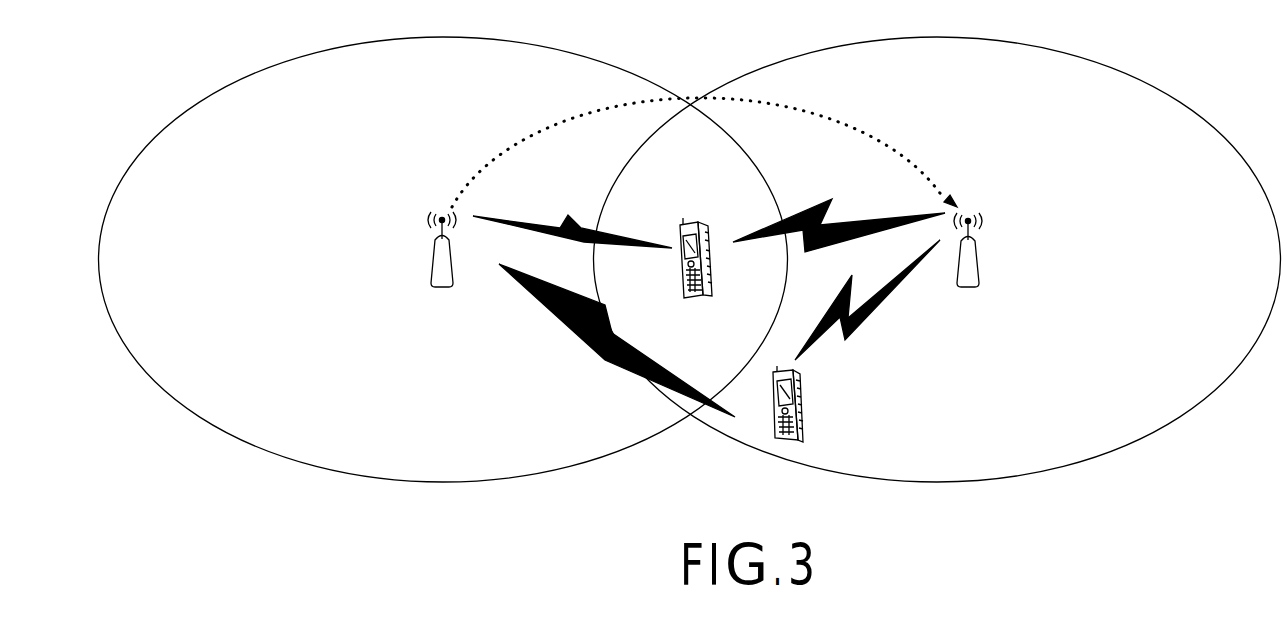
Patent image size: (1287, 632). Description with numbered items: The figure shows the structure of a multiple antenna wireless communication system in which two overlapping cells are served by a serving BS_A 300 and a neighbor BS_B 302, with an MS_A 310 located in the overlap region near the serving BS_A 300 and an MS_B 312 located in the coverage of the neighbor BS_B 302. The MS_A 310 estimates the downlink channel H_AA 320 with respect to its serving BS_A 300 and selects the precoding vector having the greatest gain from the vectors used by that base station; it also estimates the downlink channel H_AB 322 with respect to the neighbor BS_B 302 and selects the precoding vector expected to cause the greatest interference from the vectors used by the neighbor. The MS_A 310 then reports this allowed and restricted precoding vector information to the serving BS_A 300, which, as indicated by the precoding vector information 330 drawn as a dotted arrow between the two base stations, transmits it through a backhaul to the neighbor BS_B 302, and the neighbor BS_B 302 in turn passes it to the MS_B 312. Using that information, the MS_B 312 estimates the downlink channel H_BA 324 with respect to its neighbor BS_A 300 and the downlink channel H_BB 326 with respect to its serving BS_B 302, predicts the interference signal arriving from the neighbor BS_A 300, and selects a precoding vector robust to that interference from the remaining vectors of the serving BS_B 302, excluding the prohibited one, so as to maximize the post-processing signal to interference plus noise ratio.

The serving BS_A 300 is at (432, 260).
The neighbor BS_B 302 is at (978, 258).
The MS_A 310 is at (697, 224).
The MS_B 312 is at (802, 408).
The downlink channel H_AA 320 is at (624, 229).
The downlink channel H_AB 322 is at (880, 224).
The downlink channel H_BA 324 is at (553, 314).
The downlink channel H_BB 326 is at (893, 291).
The precoding vector information 330 is at (715, 63).